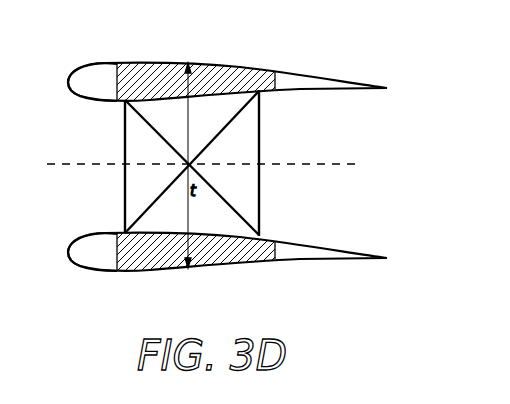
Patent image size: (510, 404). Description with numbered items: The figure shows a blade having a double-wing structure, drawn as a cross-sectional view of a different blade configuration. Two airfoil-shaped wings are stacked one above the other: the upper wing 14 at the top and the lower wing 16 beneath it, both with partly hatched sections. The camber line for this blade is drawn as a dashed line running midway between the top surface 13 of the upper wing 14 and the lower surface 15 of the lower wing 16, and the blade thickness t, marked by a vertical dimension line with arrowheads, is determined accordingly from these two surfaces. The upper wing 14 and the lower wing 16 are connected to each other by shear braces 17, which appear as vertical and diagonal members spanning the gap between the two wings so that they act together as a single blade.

The top surface 13 is at (98, 63).
The upper wing 14 is at (93, 90).
The lower surface 15 is at (148, 272).
The lower wing 16 is at (92, 259).
The shear braces 17 is at (261, 191).